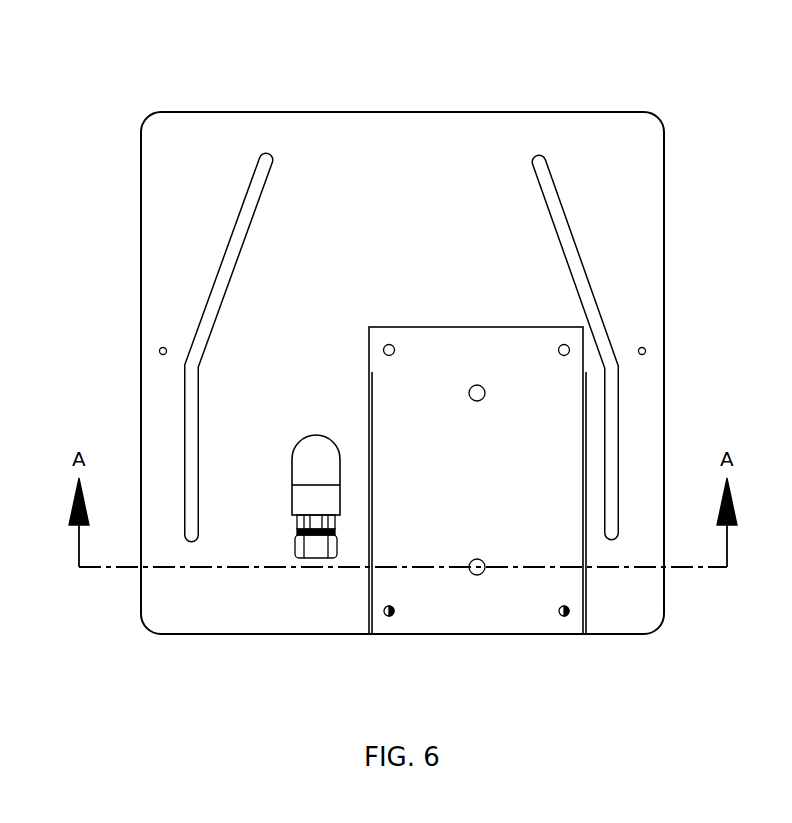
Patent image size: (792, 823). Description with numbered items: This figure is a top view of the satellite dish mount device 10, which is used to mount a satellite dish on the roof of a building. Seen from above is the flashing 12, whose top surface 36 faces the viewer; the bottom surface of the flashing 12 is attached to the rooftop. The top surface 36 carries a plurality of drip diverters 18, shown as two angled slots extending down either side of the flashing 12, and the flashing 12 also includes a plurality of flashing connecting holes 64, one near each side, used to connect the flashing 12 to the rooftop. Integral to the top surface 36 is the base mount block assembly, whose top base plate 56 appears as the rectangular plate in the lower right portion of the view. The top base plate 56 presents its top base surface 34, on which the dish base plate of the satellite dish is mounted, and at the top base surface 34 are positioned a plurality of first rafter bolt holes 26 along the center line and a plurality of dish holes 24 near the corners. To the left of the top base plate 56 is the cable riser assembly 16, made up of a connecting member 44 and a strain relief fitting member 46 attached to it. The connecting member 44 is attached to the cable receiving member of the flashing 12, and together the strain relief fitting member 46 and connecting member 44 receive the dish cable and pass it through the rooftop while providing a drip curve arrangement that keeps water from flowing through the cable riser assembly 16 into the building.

The satellite dish mount device 10 is at (497, 80).
The flashing 12 is at (664, 191).
The cable riser assembly 16 is at (260, 558).
The drip diverters 18 is at (224, 272).
The dish holes 24 is at (558, 609).
The first rafter bolt holes 26 is at (470, 576).
The top base surface 34 is at (488, 489).
The top surface 36 is at (414, 201).
The connecting member 44 is at (308, 471).
The strain relief fitting member 46 is at (290, 508).
The top base plate 56 is at (557, 388).
The flashing connecting holes 64 is at (160, 348).